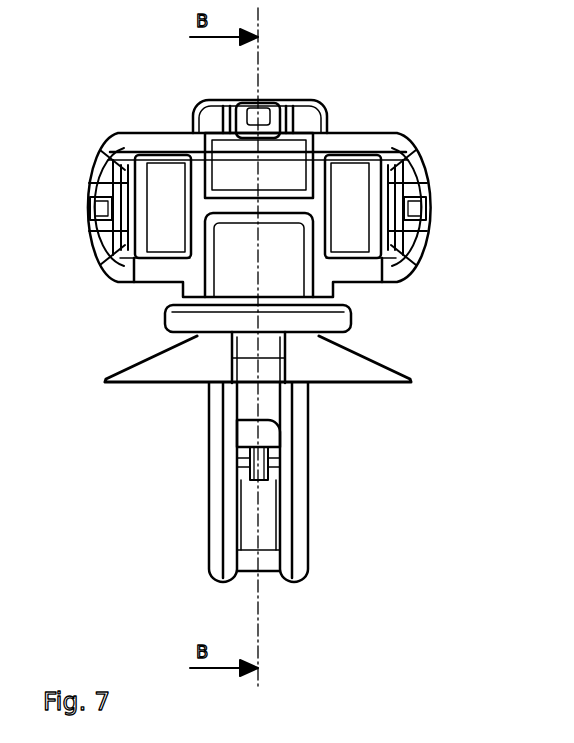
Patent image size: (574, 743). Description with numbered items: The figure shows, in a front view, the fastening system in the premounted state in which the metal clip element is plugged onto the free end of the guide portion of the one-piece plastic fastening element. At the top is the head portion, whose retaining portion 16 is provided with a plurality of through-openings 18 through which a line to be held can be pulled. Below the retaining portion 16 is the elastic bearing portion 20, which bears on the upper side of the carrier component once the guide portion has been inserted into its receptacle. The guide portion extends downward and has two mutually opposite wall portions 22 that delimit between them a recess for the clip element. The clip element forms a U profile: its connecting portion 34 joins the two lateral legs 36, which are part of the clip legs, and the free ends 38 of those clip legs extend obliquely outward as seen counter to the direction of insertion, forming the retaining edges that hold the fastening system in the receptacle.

The retaining portion 16 is at (388, 130).
The through-openings 18 is at (166, 175).
The elastic bearing portion 20 is at (353, 358).
The wall portions 22 is at (218, 522).
The connecting portion 34 is at (248, 563).
The lateral legs 36 is at (273, 535).
The free ends 38 is at (218, 443).